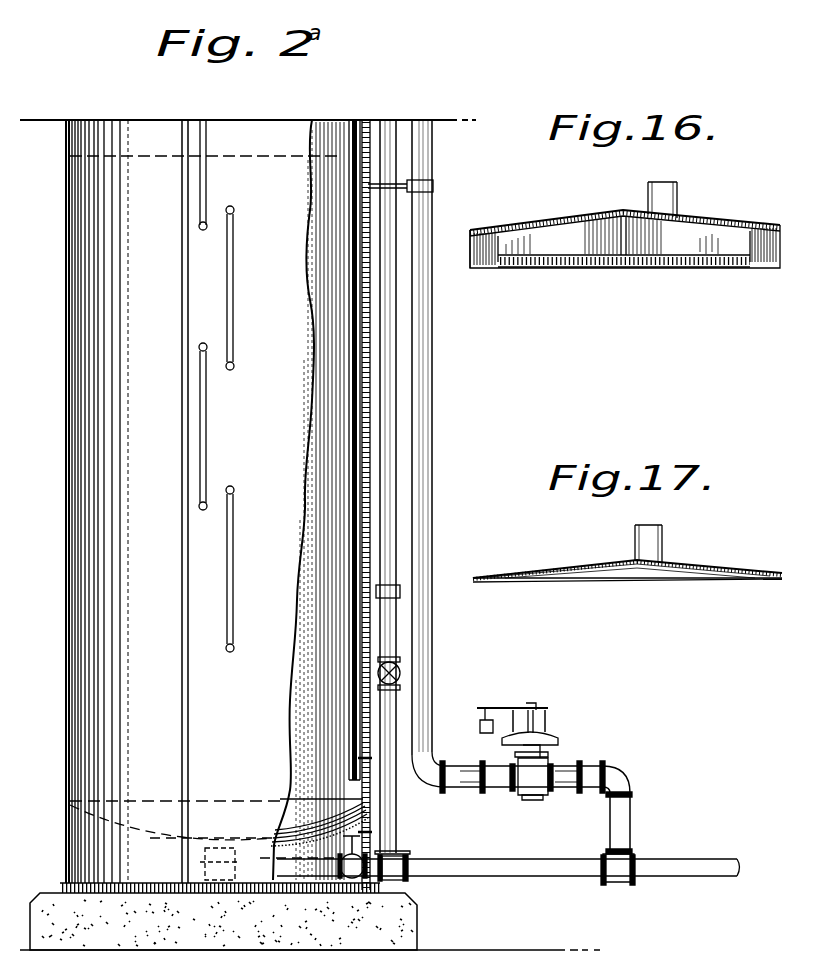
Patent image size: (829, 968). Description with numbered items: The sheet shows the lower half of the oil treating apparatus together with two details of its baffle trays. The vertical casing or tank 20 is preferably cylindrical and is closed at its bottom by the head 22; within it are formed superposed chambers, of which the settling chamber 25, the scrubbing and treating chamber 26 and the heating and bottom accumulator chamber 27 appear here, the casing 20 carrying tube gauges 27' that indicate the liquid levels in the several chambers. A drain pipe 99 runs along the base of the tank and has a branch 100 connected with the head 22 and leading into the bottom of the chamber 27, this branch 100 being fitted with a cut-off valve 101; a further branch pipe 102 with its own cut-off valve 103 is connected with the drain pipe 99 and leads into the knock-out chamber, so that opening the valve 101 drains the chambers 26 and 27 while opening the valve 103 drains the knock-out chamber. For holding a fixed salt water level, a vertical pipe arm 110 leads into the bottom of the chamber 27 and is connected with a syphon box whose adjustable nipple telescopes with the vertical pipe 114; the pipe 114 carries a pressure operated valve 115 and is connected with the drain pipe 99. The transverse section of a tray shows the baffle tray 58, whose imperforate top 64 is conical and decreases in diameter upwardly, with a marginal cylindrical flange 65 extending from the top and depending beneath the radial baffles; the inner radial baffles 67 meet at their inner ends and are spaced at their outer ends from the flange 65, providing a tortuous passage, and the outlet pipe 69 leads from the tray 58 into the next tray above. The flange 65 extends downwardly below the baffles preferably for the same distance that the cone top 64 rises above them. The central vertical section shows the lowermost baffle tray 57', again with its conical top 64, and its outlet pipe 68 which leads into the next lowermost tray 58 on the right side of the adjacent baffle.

In FIG. 2A, the vertical casing or tank 20 is at (80, 467).
In FIG. 2A, the bottom head 22 is at (142, 840).
In FIG. 2A, the settling chamber 25 is at (328, 134).
In FIG. 2A, the scrubbing and treating chamber 26 is at (333, 468).
In FIG. 2A, the heating and bottom accumulator chamber 27 is at (300, 500).
In FIG. 2A, the tube gauges 27' is at (238, 386).
In FIG. 2A, the drain pipe 99 is at (512, 878).
In FIG. 2A, the branch pipe 100 is at (322, 878).
In FIG. 2A, the cut-off valve 101 is at (400, 856).
In FIG. 2A, the branch pipe 102 is at (398, 632).
In FIG. 2A, the cut-off valve 103 is at (403, 674).
In FIG. 2A, the vertical pipe arm 110 is at (352, 425).
In FIG. 2A, the vertical pipe 114 is at (430, 540).
In FIG. 2A, the pressure operated valve 115 is at (560, 735).
In FIG. 16, the baffle tray 58 is at (738, 266).
In FIG. 16, the imperforate top 64 is at (567, 209).
In FIG. 17, the imperforate top 64 is at (555, 557).
In FIG. 16, the marginal cylindrical flange 65 is at (469, 266).
In FIG. 16, the inner radial baffles 67 is at (660, 243).
In FIG. 16, the outlet pipe 69 is at (679, 195).
In FIG. 17, the outlet pipe 68 is at (634, 537).
In FIG. 17, the lowermost baffle tray 57' is at (627, 561).